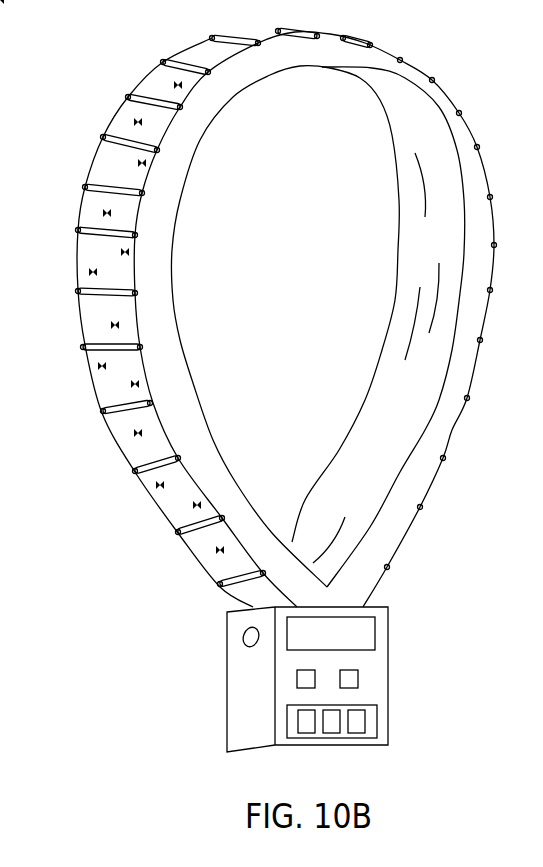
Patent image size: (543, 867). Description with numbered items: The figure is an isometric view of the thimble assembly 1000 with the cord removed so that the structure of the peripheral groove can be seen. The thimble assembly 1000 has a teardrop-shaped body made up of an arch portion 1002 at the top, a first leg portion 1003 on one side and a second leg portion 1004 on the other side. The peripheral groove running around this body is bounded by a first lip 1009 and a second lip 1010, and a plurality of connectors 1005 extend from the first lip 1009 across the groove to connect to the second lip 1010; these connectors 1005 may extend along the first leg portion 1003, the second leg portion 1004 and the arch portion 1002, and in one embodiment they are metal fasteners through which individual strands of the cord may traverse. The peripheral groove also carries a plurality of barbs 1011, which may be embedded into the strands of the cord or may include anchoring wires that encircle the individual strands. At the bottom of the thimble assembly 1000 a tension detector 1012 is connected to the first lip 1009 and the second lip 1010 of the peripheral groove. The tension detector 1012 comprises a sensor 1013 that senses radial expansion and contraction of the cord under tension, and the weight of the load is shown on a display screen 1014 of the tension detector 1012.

The thimble assembly 1000 is at (324, 270).
The arch portion 1002 is at (310, 53).
The first leg portion 1003 is at (182, 340).
The second leg portion 1004 is at (405, 302).
The connectors 1005 is at (103, 413).
The first lip 1009 is at (250, 547).
The second lip 1010 is at (205, 567).
The barbs 1011 is at (113, 328).
The tension detector 1012 is at (235, 723).
The sensor 1013 is at (250, 645).
The display screen 1014 is at (377, 720).